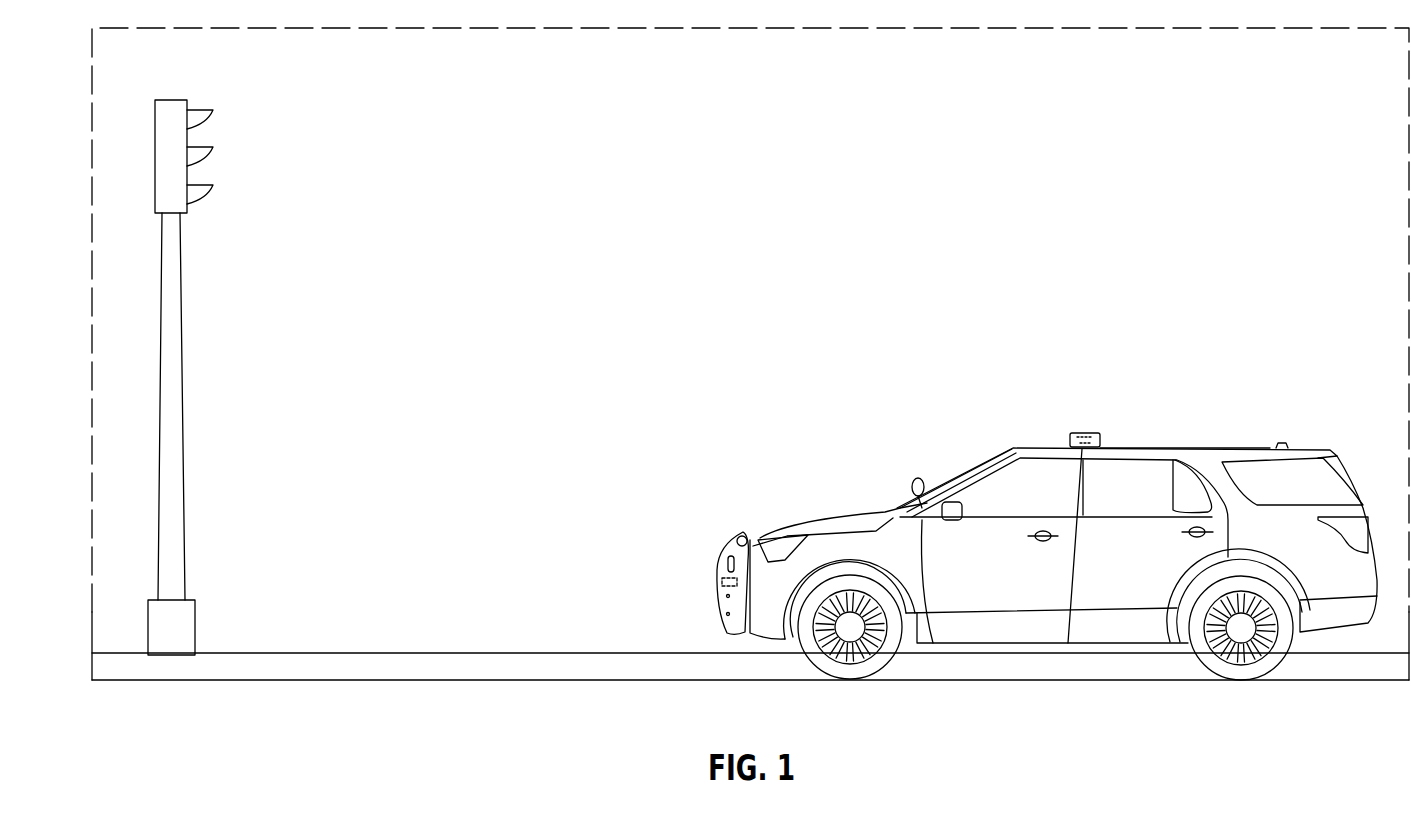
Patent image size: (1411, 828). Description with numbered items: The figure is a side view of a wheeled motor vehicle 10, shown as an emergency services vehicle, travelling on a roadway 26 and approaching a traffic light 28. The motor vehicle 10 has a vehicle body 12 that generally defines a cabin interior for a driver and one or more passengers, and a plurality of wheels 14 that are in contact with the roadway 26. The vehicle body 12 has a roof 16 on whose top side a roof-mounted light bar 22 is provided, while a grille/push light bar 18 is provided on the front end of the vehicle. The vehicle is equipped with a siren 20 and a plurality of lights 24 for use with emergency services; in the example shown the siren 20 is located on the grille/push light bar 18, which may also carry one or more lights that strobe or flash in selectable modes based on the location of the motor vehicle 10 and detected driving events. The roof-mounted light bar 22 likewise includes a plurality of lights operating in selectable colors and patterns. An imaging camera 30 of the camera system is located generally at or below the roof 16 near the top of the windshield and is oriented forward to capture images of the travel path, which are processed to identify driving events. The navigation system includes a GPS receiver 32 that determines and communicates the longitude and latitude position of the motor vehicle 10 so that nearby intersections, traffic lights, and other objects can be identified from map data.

The motor vehicle 10 is at (832, 452).
The vehicle body 12 is at (1318, 582).
The wheels 14 is at (885, 658).
The roof 16 is at (1187, 446).
The grille/push light bar 18 is at (730, 540).
The siren 20 is at (714, 572).
The roof-mounted light bar 22 is at (1072, 437).
The lights 24 is at (1096, 432).
The roadway 26 is at (483, 678).
The traffic light 28 is at (188, 112).
The imaging camera 30 is at (993, 458).
The GPS receiver 32 is at (1278, 443).